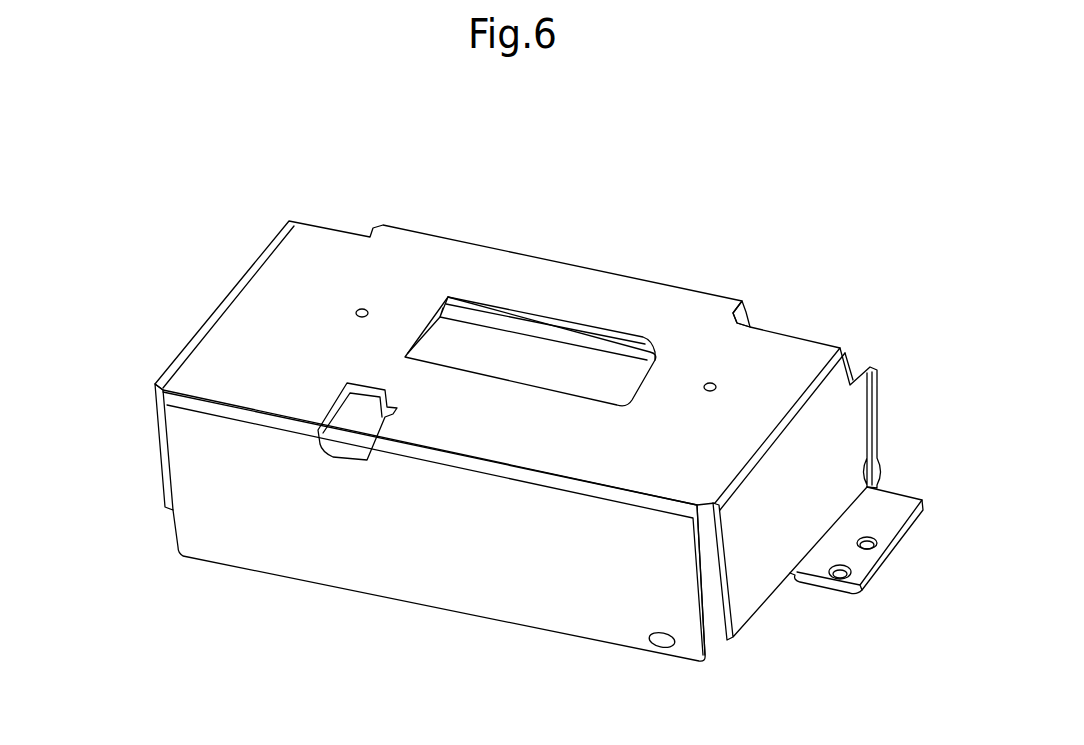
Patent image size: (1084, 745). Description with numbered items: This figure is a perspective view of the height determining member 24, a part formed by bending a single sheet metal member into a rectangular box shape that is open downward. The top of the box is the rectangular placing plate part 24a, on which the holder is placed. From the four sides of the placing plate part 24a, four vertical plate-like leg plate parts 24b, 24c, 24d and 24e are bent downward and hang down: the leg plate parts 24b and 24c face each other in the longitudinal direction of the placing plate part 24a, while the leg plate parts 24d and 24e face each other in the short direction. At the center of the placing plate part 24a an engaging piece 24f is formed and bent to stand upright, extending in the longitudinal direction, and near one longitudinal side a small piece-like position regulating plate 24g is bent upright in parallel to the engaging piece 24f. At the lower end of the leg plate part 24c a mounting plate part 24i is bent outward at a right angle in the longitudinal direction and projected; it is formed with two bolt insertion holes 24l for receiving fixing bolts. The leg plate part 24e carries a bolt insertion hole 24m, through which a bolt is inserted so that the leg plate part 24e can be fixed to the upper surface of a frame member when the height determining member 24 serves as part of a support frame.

The height determining member 24 is at (197, 220).
The placing plate part 24a is at (336, 272).
The leg plate part 24b is at (157, 430).
The leg plate part 24c is at (828, 432).
The leg plate part 24d is at (753, 313).
The leg plate part 24e is at (447, 547).
The engaging piece 24f is at (552, 322).
The position regulating plate 24g is at (363, 398).
The mounting plate part 24i is at (892, 517).
The bolt insertion holes 24l is at (867, 552).
The bolt insertion hole 24m is at (657, 651).